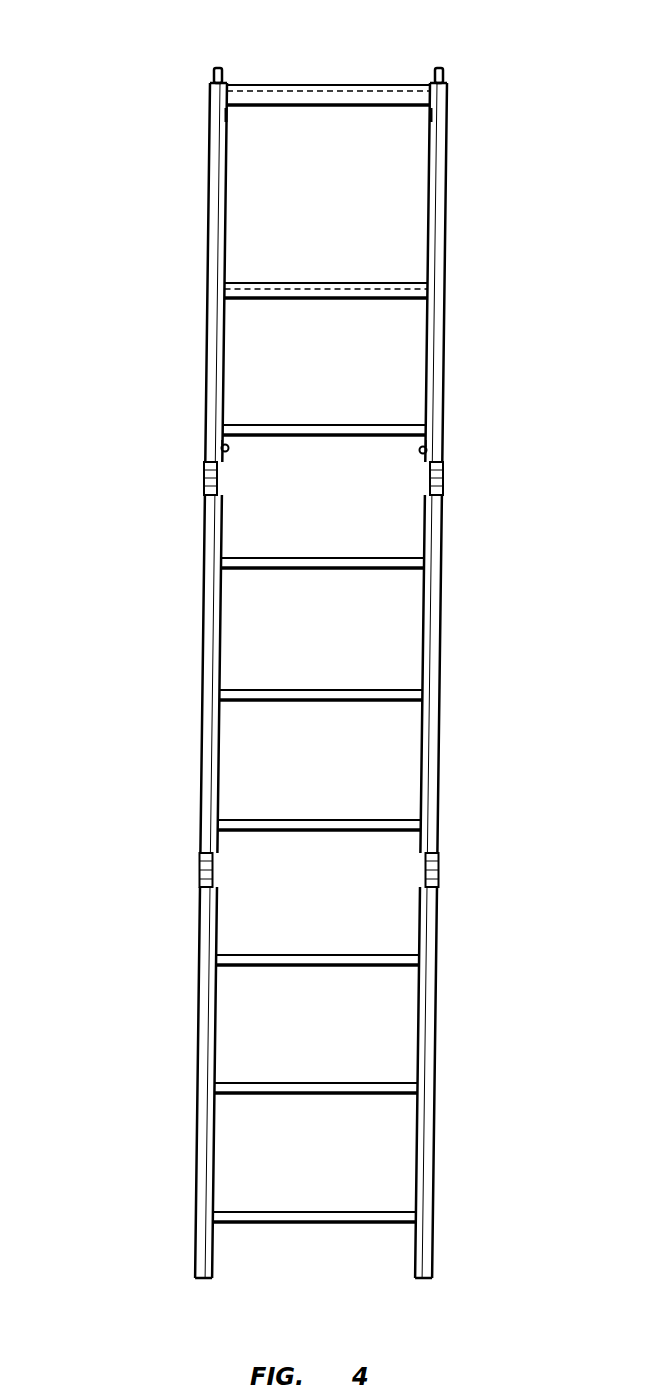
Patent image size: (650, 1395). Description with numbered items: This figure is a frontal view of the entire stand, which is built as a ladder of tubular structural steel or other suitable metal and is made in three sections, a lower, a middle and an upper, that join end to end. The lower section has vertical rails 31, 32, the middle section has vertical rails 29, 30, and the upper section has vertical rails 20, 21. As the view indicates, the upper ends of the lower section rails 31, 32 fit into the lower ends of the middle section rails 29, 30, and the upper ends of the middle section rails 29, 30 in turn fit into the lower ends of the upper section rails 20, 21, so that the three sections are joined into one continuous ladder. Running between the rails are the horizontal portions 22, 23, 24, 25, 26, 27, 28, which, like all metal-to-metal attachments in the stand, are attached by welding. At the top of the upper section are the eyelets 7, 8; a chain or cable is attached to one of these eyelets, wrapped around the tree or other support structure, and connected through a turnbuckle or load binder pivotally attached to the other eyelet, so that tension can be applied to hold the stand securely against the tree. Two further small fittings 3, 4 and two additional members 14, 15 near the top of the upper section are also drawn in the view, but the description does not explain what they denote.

The hook 3 is at (226, 451).
The hook 4 is at (421, 453).
The eyelet 7 is at (213, 72).
The eyelet 8 is at (440, 70).
The top rung 14 is at (305, 105).
The second rung 15 is at (380, 292).
The vertical rail of upper section 20 is at (207, 322).
The vertical rail of upper section 21 is at (443, 315).
The horizontal portion 22 is at (293, 437).
The horizontal portion 23 is at (282, 570).
The horizontal portion 24 is at (295, 700).
The horizontal portion 25 is at (273, 827).
The horizontal portion 26 is at (275, 967).
The horizontal portion 27 is at (268, 1093).
The horizontal portion 28 is at (252, 1225).
The vertical rail of middle section 29 is at (202, 752).
The vertical rail of middle section 30 is at (437, 755).
The vertical rail of lower section 31 is at (198, 1158).
The vertical rail of lower section 32 is at (432, 1170).